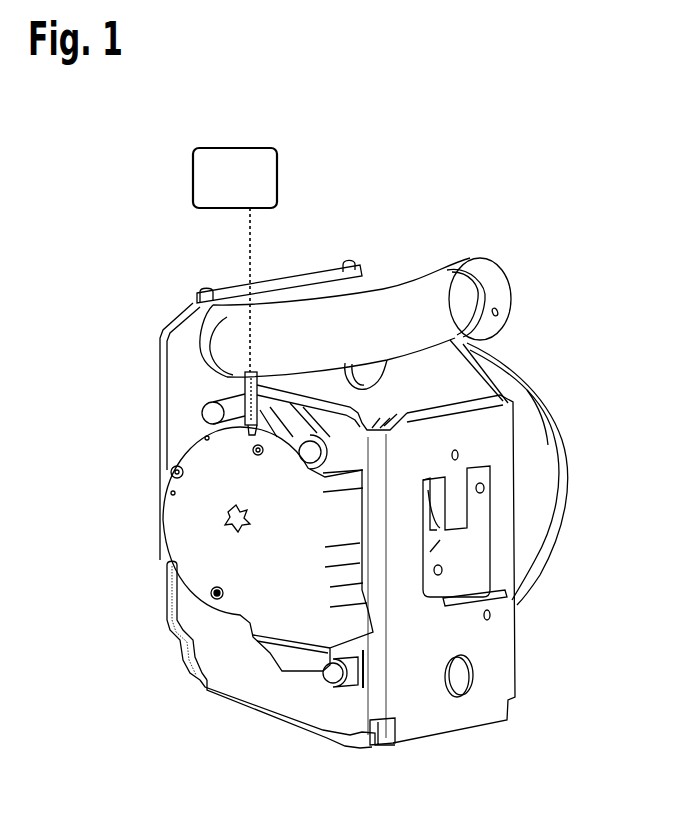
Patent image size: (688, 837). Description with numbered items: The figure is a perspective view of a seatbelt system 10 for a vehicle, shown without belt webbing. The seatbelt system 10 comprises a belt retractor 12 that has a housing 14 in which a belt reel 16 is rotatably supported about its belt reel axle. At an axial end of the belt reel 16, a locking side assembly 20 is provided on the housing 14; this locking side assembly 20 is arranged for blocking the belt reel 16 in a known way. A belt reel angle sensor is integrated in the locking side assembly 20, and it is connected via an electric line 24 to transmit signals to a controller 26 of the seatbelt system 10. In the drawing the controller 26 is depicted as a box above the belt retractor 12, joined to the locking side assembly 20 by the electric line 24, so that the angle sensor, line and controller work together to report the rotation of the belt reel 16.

The seatbelt system 10 is at (505, 170).
The belt retractor 12 is at (231, 716).
The housing 14 is at (415, 713).
The belt reel 16 is at (436, 540).
The locking side assembly 20 is at (200, 512).
The electric line 24 is at (245, 387).
The controller 26 is at (193, 183).